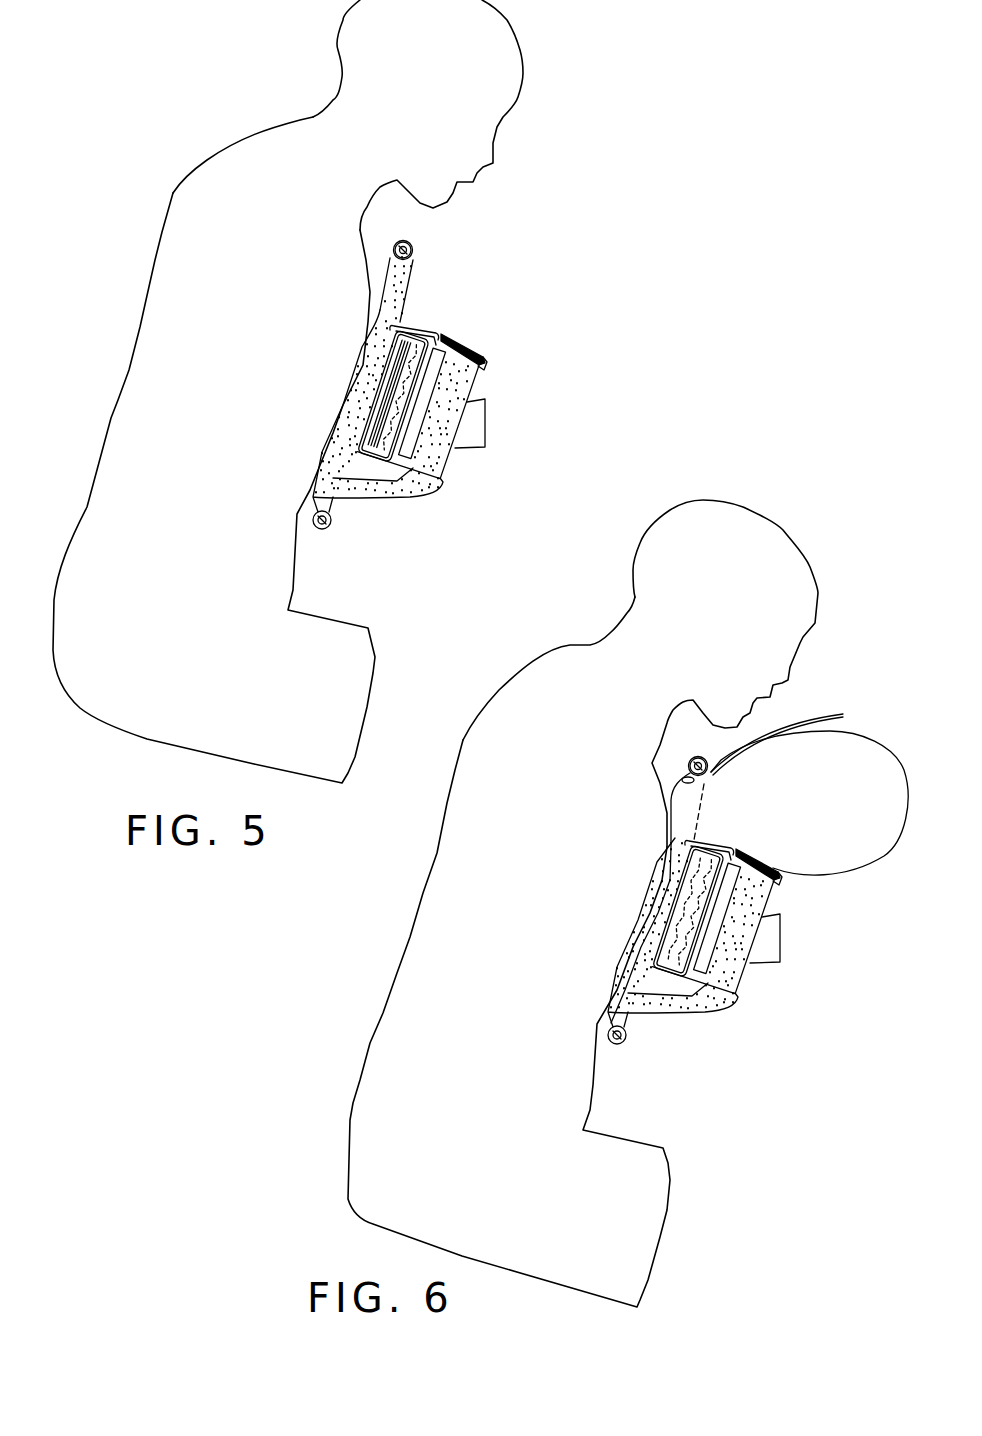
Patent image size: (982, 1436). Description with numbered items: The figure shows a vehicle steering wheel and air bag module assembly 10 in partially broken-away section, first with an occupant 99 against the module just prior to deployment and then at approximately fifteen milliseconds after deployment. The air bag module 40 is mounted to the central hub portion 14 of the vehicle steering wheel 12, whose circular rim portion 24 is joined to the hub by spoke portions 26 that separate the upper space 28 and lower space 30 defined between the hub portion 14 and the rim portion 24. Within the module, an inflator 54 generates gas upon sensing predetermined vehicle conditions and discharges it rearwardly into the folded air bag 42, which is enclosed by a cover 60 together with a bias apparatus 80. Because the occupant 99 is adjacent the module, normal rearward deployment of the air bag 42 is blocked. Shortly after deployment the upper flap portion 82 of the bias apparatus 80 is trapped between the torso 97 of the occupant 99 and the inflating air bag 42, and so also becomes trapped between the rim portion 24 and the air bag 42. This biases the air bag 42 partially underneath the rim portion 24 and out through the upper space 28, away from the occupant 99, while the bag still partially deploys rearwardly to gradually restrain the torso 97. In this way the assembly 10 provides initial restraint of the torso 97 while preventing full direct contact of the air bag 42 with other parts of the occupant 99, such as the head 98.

In FIG. 5, the vehicle steering wheel and air bag module assembly 10 is at (524, 258).
In FIG. 6, the vehicle steering wheel and air bag module assembly 10 is at (784, 1036).
In FIG. 5, the vehicle steering wheel 12 is at (415, 238).
In FIG. 6, the vehicle steering wheel 12 is at (678, 757).
In FIG. 5, the hub portion 14 is at (482, 349).
In FIG. 6, the hub portion 14 is at (770, 858).
In FIG. 5, the rim portion 24 is at (413, 253).
In FIG. 6, the rim portion 24 is at (695, 758).
In FIG. 5, the spoke portions 26 is at (367, 500).
In FIG. 6, the spoke portions 26 is at (683, 1011).
In FIG. 5, the upper space 28 is at (405, 268).
In FIG. 6, the upper space 28 is at (680, 780).
In FIG. 5, the lower space 30 is at (337, 522).
In FIG. 6, the lower space 30 is at (632, 1037).
In FIG. 5, the air bag module 40 is at (437, 325).
In FIG. 6, the air bag module 40 is at (742, 840).
In FIG. 5, the air bag 42 is at (378, 372).
In FIG. 6, the air bag 42 is at (832, 872).
In FIG. 5, the inflator 54 is at (425, 402).
In FIG. 6, the inflator 54 is at (722, 915).
In FIG. 5, the cover 60 is at (420, 321).
In FIG. 6, the cover 60 is at (722, 836).
In FIG. 5, the bias apparatus 80 is at (355, 413).
In FIG. 6, the bias apparatus 80 is at (827, 710).
In FIG. 6, the upper flap portion 82 is at (800, 715).
In FIG. 5, the torso 97 is at (181, 255).
In FIG. 6, the torso 97 is at (472, 802).
In FIG. 5, the head 98 is at (490, 90).
In FIG. 6, the head 98 is at (753, 543).
In FIG. 5, the occupant 99 is at (205, 162).
In FIG. 6, the occupant 99 is at (509, 655).